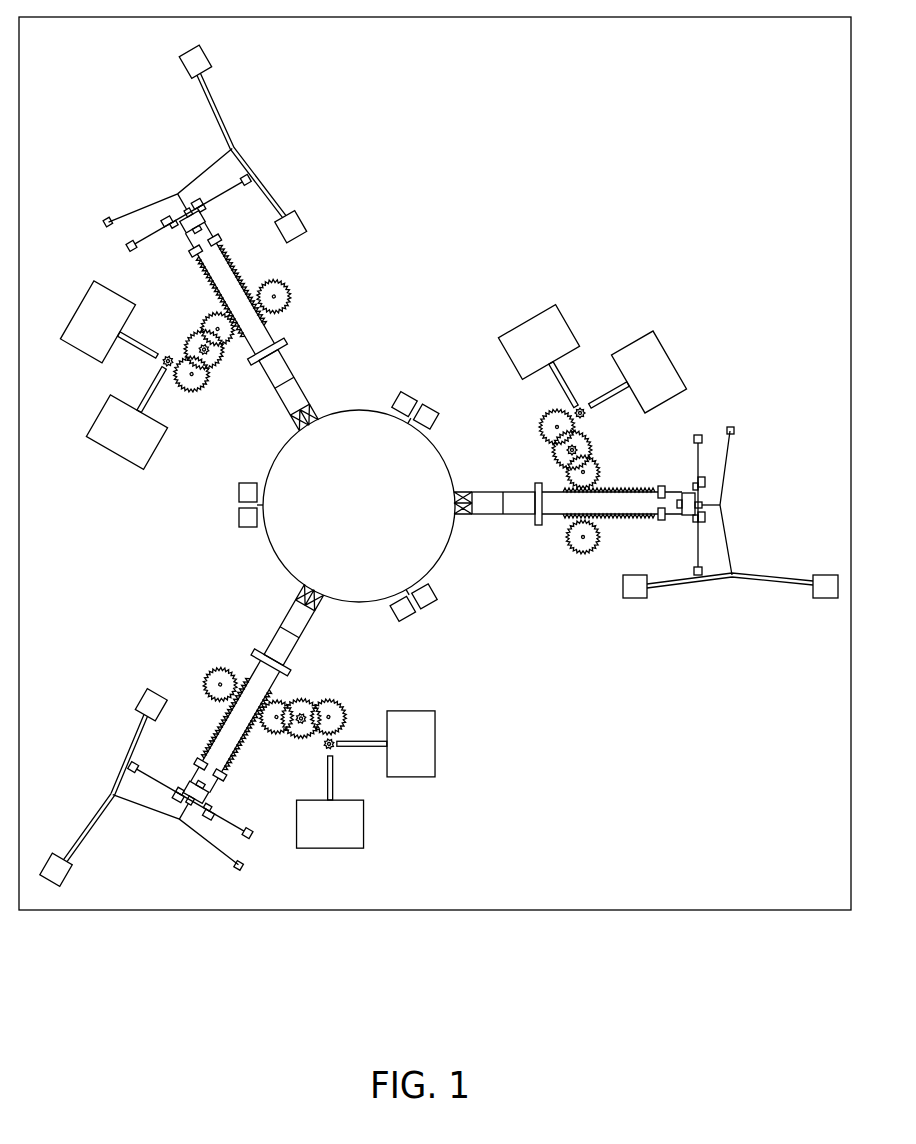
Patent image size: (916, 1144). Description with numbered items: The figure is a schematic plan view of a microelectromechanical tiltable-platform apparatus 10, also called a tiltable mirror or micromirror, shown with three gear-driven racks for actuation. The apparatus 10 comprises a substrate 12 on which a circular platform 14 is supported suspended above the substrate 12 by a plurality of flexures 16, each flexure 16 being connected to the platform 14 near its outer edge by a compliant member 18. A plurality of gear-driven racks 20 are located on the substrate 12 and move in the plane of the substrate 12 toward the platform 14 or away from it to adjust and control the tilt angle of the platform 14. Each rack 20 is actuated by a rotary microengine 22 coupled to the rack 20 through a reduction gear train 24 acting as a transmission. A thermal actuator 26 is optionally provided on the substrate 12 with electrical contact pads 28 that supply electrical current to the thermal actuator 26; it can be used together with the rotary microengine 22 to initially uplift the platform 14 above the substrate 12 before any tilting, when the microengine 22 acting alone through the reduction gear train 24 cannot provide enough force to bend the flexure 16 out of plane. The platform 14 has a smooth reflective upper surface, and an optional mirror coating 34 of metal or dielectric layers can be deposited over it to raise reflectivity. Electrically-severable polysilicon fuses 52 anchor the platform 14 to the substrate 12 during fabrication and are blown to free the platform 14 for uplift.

The microelectromechanical tiltable-platform apparatus 10 is at (425, 519).
The substrate 12 is at (64, 59).
The platform 14 is at (357, 407).
The flexures 16 is at (535, 519).
The compliant member 18 is at (461, 489).
The gear-driven rack 20 is at (556, 520).
The rotary microengine 22 is at (502, 372).
The reduction gear train 24 is at (548, 453).
The thermal actuator 26 is at (732, 604).
The electrical contact pads 28 is at (637, 603).
The mirror coating 34 is at (372, 514).
The electrically-severable polysilicon fuses 52 is at (424, 598).